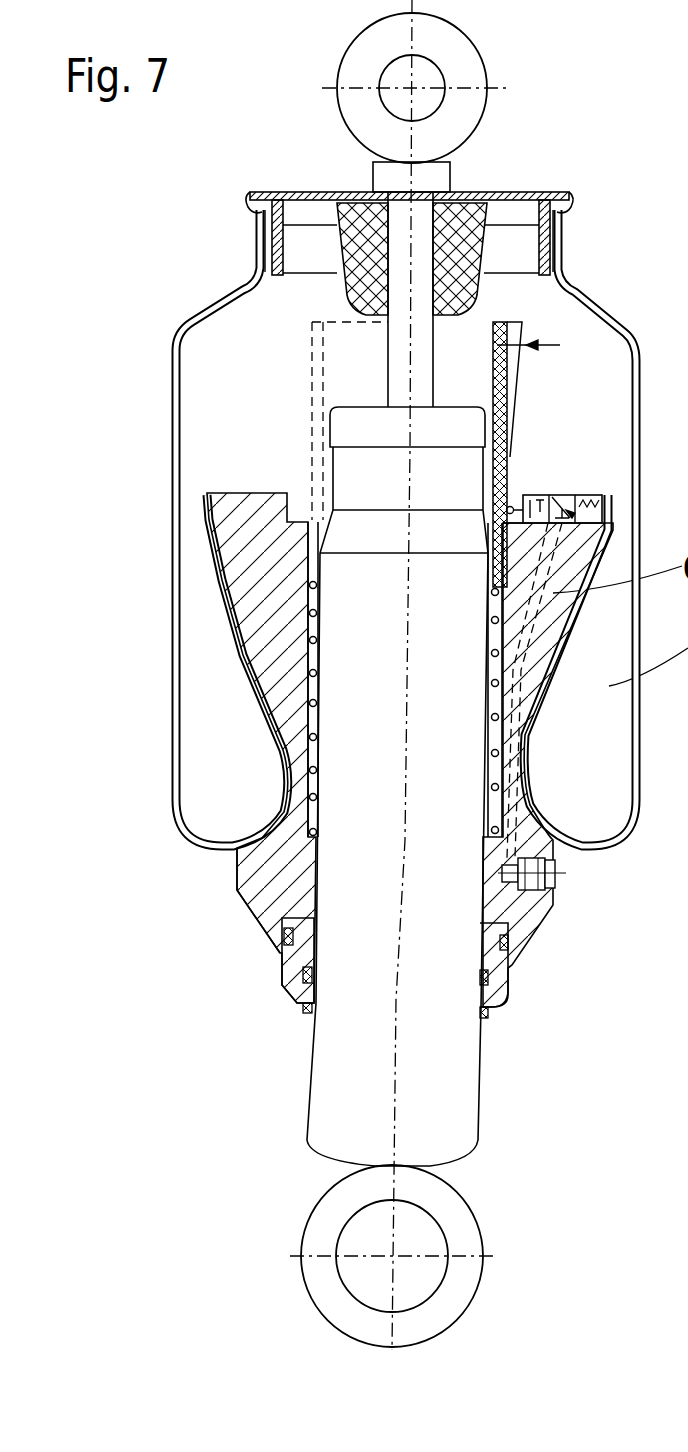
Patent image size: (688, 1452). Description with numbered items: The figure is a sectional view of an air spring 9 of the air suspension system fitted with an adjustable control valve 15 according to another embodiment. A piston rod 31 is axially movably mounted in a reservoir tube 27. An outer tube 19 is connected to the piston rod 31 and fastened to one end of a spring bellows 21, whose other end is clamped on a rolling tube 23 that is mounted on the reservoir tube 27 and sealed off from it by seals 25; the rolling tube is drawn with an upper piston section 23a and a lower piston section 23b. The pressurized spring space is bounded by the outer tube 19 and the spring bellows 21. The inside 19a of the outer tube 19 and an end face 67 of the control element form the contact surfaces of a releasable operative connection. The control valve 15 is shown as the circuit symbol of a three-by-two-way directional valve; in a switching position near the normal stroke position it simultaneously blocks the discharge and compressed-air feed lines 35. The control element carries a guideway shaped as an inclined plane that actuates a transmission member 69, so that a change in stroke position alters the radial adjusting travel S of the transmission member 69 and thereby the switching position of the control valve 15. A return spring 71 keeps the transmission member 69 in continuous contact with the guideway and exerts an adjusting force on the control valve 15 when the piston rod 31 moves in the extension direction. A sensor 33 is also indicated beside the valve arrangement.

The air spring 9 is at (193, 921).
The control valve 15 is at (575, 488).
The outer tube 19 is at (522, 196).
The inside of the outer tube 19a is at (566, 238).
The spring bellows 21 is at (541, 368).
The rolling tube 23 is at (527, 925).
The upper piston section 23a is at (236, 850).
The lower piston section 23b is at (263, 912).
The seals 25 is at (502, 998).
The reservoir tube 27 is at (450, 1140).
The piston rod 31 is at (393, 334).
The sensor 33 is at (515, 400).
The compressed-air feed line 35 is at (492, 620).
The end face of the control element 67 is at (588, 294).
The transmission member 69 is at (512, 506).
The return spring 71 is at (600, 517).
The adjusting travel S is at (528, 332).